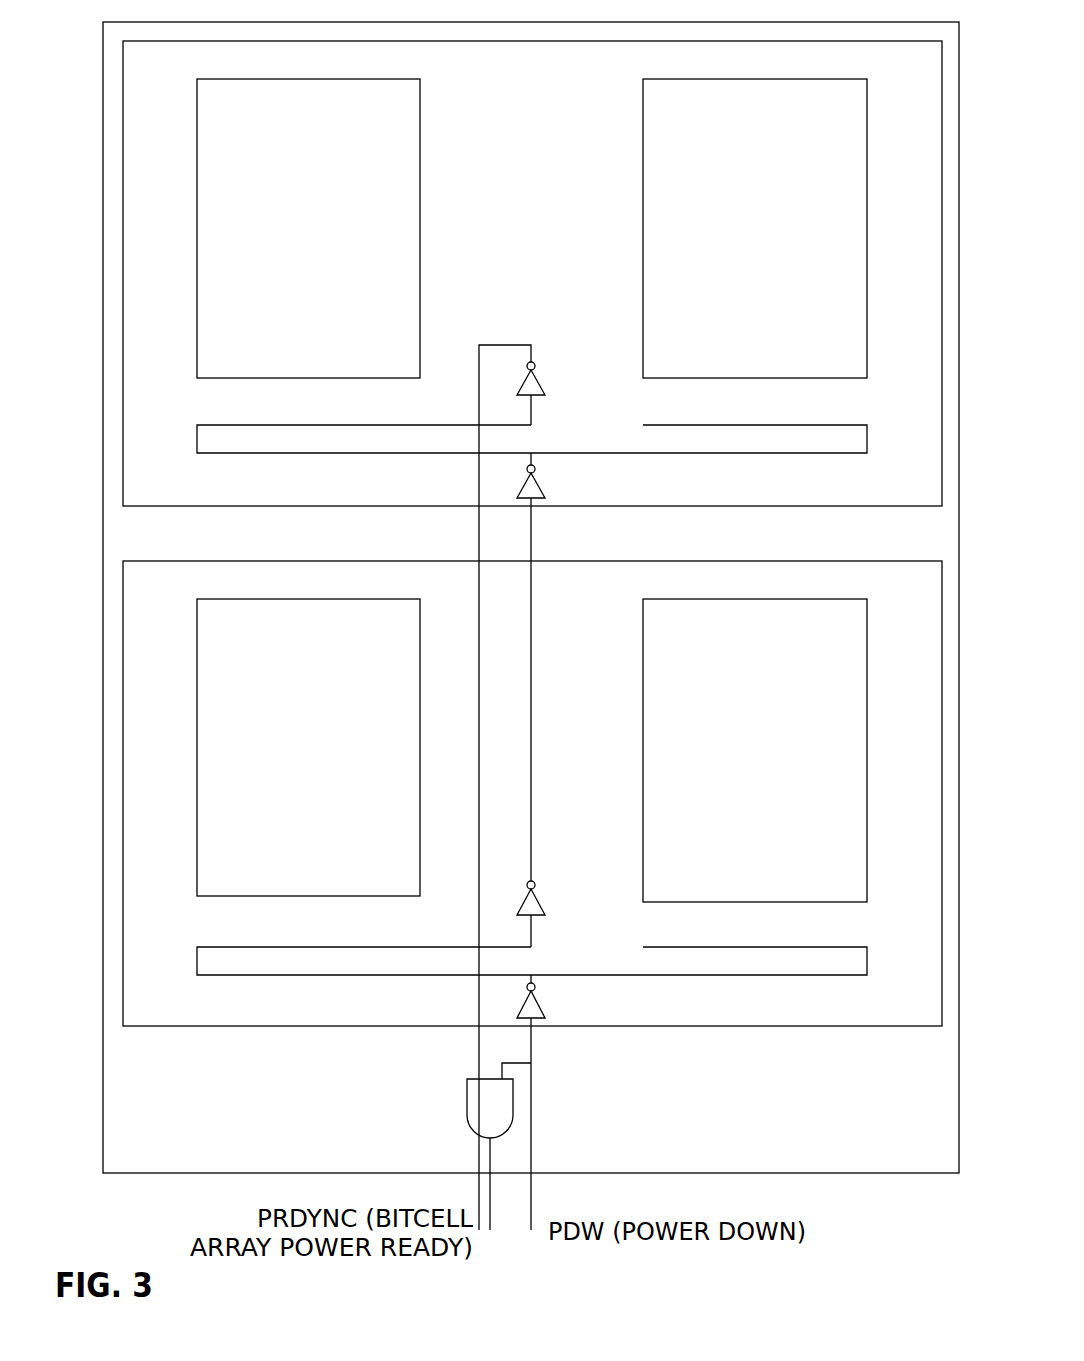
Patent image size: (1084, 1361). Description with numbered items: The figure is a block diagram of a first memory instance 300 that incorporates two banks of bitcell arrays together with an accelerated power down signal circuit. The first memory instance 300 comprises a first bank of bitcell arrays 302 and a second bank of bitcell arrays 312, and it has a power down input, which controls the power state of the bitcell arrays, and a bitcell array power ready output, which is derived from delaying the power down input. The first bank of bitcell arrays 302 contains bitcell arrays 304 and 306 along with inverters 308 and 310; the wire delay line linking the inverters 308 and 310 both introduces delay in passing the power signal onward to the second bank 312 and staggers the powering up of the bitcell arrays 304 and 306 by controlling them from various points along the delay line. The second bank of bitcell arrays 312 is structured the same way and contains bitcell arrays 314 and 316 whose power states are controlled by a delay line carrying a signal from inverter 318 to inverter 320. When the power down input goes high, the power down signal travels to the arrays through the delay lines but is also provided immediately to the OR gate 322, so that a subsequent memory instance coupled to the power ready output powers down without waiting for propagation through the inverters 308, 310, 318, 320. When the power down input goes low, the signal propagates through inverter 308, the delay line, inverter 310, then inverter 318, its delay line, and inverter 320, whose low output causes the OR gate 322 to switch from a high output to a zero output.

The first memory instance 300 is at (943, 1166).
The first bank of bitcell arrays 302 is at (123, 617).
The bitcell array 304 is at (403, 891).
The bitcell array 306 is at (853, 897).
The inverter 308 is at (541, 1000).
The inverter 310 is at (541, 896).
The second bank of bitcell arrays 312 is at (123, 98).
The bitcell array 314 is at (403, 371).
The bitcell array 316 is at (853, 376).
The inverter 318 is at (541, 482).
The inverter 320 is at (541, 378).
The OR gate 322 is at (467, 1103).